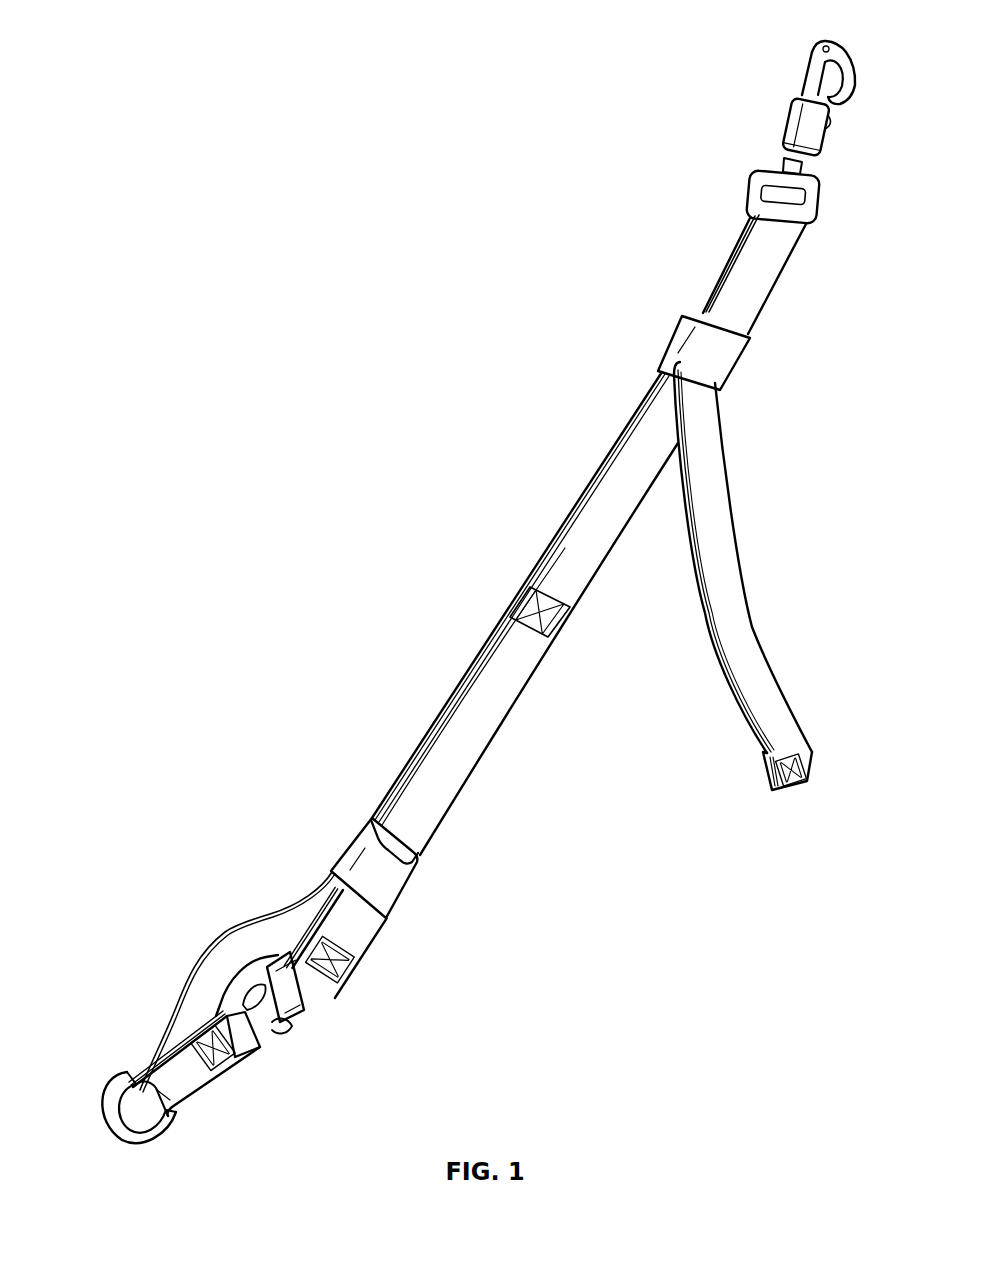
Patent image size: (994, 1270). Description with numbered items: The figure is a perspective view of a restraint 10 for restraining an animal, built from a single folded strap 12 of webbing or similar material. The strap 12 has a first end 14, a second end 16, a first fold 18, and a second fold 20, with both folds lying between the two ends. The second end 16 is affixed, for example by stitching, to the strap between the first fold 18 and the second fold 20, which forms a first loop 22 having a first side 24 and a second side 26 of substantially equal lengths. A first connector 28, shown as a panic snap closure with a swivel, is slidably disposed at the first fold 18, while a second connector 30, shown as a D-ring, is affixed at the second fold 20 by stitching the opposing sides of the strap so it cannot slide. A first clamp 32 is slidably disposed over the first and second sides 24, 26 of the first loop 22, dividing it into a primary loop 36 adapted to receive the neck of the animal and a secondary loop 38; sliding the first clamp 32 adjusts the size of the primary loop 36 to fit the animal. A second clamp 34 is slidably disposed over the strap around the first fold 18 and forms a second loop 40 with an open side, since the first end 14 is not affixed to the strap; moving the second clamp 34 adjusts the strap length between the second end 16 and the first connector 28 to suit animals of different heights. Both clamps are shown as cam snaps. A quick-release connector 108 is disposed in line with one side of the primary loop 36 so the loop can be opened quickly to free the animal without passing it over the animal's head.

The restraint 10 is at (310, 280).
The folded strap 12 is at (468, 727).
The first end 14 is at (822, 762).
The second end 16 is at (563, 620).
The first fold 18 is at (795, 228).
The second fold 20 is at (170, 1117).
The first loop 22 is at (362, 783).
The first side 24 is at (290, 928).
The second side 26 is at (362, 940).
The first connector 28 is at (838, 62).
The second connector 30 is at (120, 1090).
The first clamp 32 is at (403, 893).
The second clamp 34 is at (740, 337).
The primary loop 36 is at (133, 982).
The secondary loop 38 is at (436, 650).
The second loop 40 is at (710, 246).
The quick-release connector 108 is at (287, 1027).